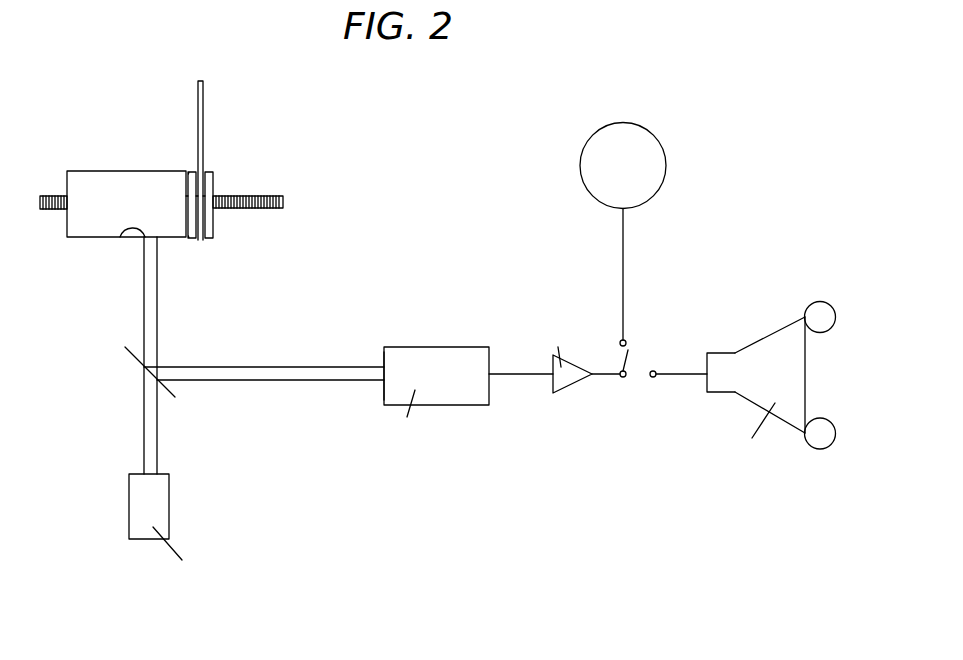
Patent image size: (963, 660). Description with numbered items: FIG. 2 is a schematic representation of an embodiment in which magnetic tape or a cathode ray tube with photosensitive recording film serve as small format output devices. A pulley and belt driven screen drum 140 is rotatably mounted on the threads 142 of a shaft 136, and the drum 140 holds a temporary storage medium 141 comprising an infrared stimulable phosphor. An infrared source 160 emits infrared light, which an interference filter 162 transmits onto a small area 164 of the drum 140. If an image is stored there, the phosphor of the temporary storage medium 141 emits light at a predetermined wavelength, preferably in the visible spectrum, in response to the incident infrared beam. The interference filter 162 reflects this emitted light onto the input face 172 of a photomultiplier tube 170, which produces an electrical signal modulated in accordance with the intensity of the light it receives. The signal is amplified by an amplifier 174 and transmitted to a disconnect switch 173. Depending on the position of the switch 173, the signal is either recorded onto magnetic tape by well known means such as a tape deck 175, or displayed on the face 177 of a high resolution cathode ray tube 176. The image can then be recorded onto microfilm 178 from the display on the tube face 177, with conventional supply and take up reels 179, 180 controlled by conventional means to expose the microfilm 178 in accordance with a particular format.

The screen drum 140 is at (104, 206).
The temporary storage medium 141 is at (118, 171).
The shaft 136 is at (230, 195).
The threads 142 is at (262, 208).
The small area 164 is at (123, 237).
The interference filter 162 is at (177, 390).
The infrared source 160 is at (168, 503).
The photomultiplier tube 170 is at (419, 394).
The input face 172 is at (384, 357).
The amplifier 174 is at (570, 385).
The disconnect switch 173 is at (629, 349).
The tape deck 175 is at (649, 173).
The cathode ray tube 176 is at (723, 387).
The face 177 is at (808, 357).
The microfilm 178 is at (783, 395).
The supply reel 179 is at (822, 320).
The take up reel 180 is at (822, 445).